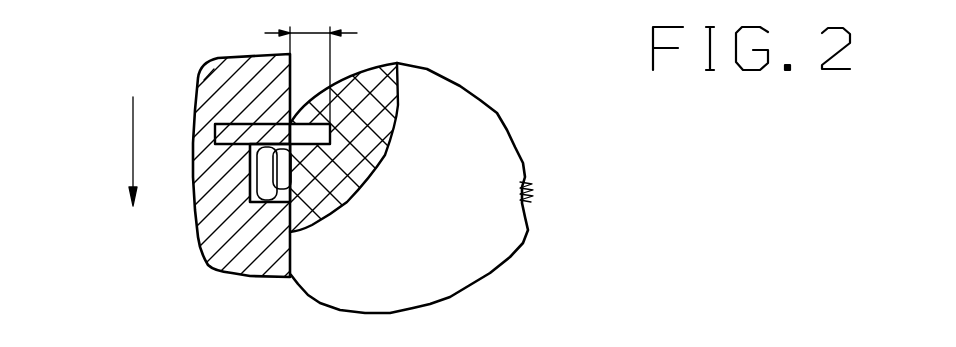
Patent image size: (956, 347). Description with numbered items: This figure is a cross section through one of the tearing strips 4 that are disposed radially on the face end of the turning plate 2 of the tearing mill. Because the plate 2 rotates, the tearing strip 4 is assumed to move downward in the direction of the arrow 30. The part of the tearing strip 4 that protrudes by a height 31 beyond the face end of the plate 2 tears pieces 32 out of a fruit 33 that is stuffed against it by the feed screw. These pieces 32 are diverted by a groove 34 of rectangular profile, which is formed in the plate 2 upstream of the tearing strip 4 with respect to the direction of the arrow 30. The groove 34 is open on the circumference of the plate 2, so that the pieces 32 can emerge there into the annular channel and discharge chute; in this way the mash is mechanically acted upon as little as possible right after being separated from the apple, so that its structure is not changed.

The plate 2 is at (258, 167).
The tearing strip 4 is at (357, 197).
The arrow 30 is at (82, 151).
The height 31 is at (248, 66).
The pieces 32 is at (170, 205).
The fruit 33 is at (451, 188).
The groove 34 is at (203, 228).